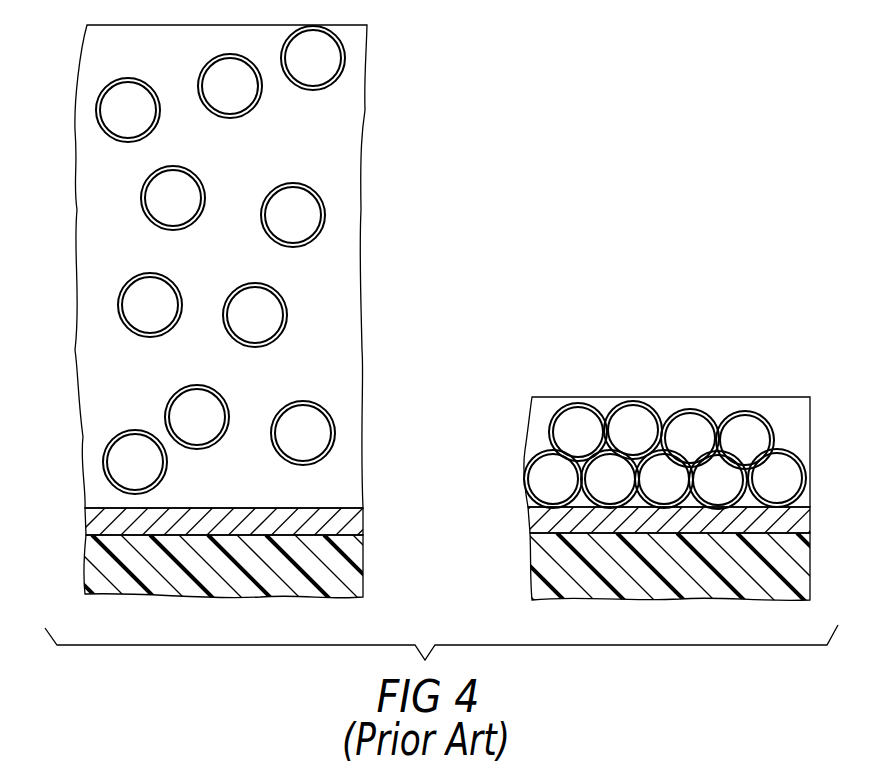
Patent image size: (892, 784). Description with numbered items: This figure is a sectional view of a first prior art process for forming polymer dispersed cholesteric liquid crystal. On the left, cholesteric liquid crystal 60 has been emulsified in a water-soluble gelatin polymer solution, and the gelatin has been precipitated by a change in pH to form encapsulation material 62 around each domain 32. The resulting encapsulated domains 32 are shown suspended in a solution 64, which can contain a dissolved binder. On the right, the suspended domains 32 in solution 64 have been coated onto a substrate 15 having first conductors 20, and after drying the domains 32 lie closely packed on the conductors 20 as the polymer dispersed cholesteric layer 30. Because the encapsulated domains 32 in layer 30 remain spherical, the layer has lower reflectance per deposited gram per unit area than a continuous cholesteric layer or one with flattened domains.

The substrate 15 is at (95, 565).
The first conductors 20 is at (90, 524).
The polymer dispersed cholesteric layer 30 is at (517, 397).
The domains 32 is at (420, 267).
The cholesteric liquid crystal 60 is at (113, 119).
The encapsulation material 62 is at (108, 143).
The solution 64 is at (330, 145).